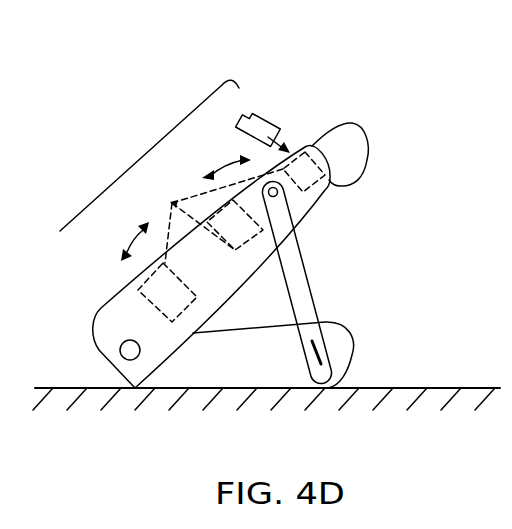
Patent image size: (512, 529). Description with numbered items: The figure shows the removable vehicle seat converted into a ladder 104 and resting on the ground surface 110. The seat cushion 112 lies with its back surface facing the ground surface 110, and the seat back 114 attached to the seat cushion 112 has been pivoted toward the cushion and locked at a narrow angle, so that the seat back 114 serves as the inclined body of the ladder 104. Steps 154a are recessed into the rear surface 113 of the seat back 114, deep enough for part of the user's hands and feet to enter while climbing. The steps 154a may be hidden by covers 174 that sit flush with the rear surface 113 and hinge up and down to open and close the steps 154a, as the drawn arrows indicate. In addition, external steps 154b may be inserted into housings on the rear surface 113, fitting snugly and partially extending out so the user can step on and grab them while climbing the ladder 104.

The ladder 104 is at (123, 166).
The ground surface 110 is at (455, 388).
The seat cushion 112 is at (220, 379).
The rear surface 113 is at (123, 297).
The seat back 114 is at (147, 332).
The steps 154a is at (231, 237).
The external steps 154b is at (242, 112).
The covers 174 is at (234, 199).